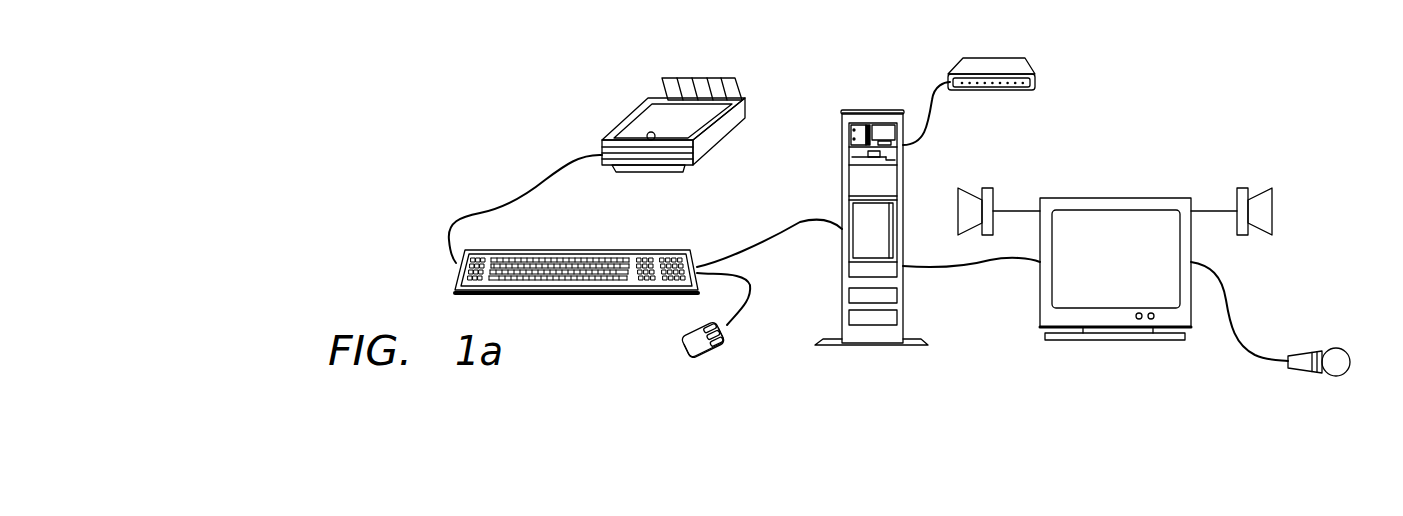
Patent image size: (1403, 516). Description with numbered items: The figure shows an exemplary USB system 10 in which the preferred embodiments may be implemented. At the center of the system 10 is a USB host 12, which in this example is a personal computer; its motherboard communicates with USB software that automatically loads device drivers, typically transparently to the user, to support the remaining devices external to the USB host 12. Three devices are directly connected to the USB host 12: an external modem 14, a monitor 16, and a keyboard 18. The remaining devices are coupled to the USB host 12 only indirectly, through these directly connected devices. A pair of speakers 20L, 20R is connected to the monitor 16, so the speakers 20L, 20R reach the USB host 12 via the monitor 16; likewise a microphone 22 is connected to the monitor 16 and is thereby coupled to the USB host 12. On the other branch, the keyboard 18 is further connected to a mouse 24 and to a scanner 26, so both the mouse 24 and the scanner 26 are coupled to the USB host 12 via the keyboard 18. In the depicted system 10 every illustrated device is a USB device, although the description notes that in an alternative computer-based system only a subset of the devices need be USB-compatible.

The USB system 10 is at (504, 91).
The USB host 12 is at (842, 157).
The external modem 14 is at (1038, 80).
The monitor 16 is at (1113, 198).
The keyboard 18 is at (577, 297).
The speaker 20L is at (990, 187).
The speaker 20R is at (1243, 187).
The microphone 22 is at (1338, 347).
The mouse 24 is at (727, 348).
The scanner 26 is at (626, 118).